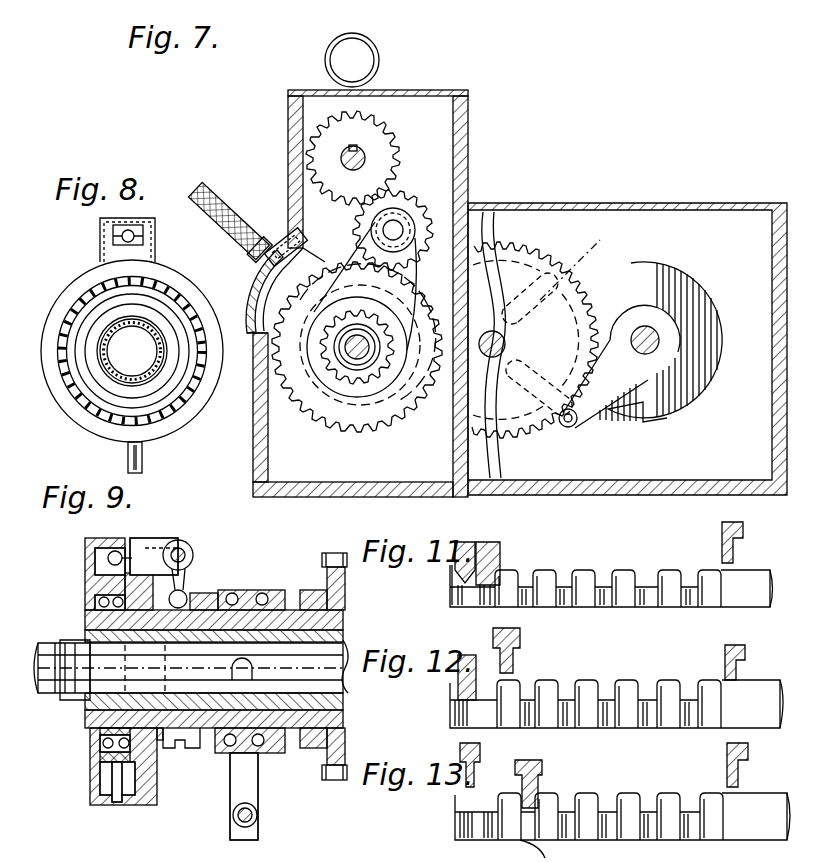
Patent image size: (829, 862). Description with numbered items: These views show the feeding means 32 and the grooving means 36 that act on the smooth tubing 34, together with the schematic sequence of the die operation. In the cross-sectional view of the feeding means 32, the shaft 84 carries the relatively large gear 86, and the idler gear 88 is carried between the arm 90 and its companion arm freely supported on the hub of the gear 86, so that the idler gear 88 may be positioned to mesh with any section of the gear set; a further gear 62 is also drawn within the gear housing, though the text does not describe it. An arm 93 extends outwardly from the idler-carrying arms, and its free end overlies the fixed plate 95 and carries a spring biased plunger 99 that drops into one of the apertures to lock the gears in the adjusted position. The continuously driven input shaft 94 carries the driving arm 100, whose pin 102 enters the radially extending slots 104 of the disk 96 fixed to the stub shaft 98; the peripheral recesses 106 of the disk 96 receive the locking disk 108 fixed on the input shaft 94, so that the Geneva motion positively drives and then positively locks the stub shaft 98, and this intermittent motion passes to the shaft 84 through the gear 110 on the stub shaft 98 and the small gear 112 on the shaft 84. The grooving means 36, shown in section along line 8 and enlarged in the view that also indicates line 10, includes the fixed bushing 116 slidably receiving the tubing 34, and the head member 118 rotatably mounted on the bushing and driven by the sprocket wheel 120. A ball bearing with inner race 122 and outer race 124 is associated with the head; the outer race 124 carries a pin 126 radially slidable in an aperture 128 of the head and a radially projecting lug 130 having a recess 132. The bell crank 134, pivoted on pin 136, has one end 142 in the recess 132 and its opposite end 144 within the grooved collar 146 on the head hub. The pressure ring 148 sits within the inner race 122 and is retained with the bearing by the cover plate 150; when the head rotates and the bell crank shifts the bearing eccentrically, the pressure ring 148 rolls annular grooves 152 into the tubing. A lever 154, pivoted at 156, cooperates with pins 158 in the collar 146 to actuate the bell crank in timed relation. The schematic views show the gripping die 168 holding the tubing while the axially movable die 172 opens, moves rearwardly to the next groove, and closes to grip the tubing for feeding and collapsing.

In FIG. 9, the section line 8— 8 is at (75, 545).
In FIG. 9, the section line 10— 10 is at (228, 550).
In FIG. 7, the feeding means 32 is at (500, 200).
In FIG. 7, the tubing 34 is at (380, 54).
In FIG. 8, the tubing 34 is at (102, 335).
In FIG. 9, the tubing 34 is at (191, 666).
In FIG. 11, the tubing 34 is at (760, 568).
In FIG. 12, the tubing 34 is at (770, 690).
In FIG. 13, the tubing 34 is at (638, 798).
In FIG. 9, the grooving means 36 is at (82, 782).
In FIG. 7, the drive gear 62 is at (405, 133).
In FIG. 7, the shaft 84 is at (346, 366).
In FIG. 7, the gear 86 is at (388, 414).
In FIG. 7, the idler gear 88 is at (400, 206).
In FIG. 7, the arm 90 is at (357, 264).
In FIG. 7, the arm 93 is at (279, 238).
In FIG. 7, the input shaft 94 is at (648, 328).
In FIG. 7, the fixed plate 95 is at (249, 302).
In FIG. 7, the disk 96 is at (583, 234).
In FIG. 7, the stub shaft 98 is at (506, 343).
In FIG. 7, the spring biased plunger 99 is at (212, 186).
In FIG. 7, the driving arm 100 is at (600, 406).
In FIG. 7, the pin 102 is at (569, 428).
In FIG. 7, the slots 104 is at (634, 236).
In FIG. 7, the peripheral recesses 106 is at (528, 240).
In FIG. 7, the locking disk 108 is at (700, 404).
In FIG. 7, the gear 110 is at (557, 230).
In FIG. 7, the small gear 112 is at (326, 376).
In FIG. 9, the fixed bushing 116 is at (330, 628).
In FIG. 9, the head member 118 is at (150, 806).
In FIG. 9, the sprocket wheel 120 is at (345, 595).
In FIG. 8, the inner race 122 is at (178, 375).
In FIG. 9, the inner race 122 is at (96, 608).
In FIG. 8, the outer race 124 is at (100, 258).
In FIG. 9, the outer race 124 is at (96, 580).
In FIG. 8, the pin 126 is at (142, 452).
In FIG. 9, the pin 126 is at (100, 776).
In FIG. 9, the aperture 128 is at (118, 806).
In FIG. 9, the lug 130 is at (118, 552).
In FIG. 8, the recess 132 is at (150, 235).
In FIG. 9, the recess 132 is at (108, 558).
In FIG. 9, the bell crank 134 is at (182, 540).
In FIG. 9, the pin 136 is at (192, 556).
In FIG. 8, the end of bell crank 142 is at (122, 237).
In FIG. 9, the end of bell crank 142 is at (152, 545).
In FIG. 9, the end of bell crank 144 is at (190, 592).
In FIG. 9, the grooved collar 146 is at (190, 748).
In FIG. 8, the pressure ring 148 is at (88, 378).
In FIG. 9, the pressure ring 148 is at (96, 729).
In FIG. 11, the pressure ring 148 is at (743, 526).
In FIG. 12, the pressure ring 148 is at (745, 649).
In FIG. 13, the pressure ring 148 is at (748, 750).
In FIG. 9, the cover plate 150 is at (100, 753).
In FIG. 12, the cover plate 150 is at (732, 726).
In FIG. 9, the annular grooves 152 is at (72, 700).
In FIG. 9, the lever 154 is at (230, 784).
In FIG. 11, the lever 154 is at (645, 575).
In FIG. 12, the lever 154 is at (535, 685).
In FIG. 13, the lever 154 is at (612, 798).
In FIG. 9, the pivot 156 is at (258, 816).
In FIG. 9, the pins 158 is at (252, 672).
In FIG. 11, the gripping die 168 is at (465, 542).
In FIG. 12, the gripping die 168 is at (468, 656).
In FIG. 13, the gripping die 168 is at (480, 751).
In FIG. 11, the die 172 is at (495, 542).
In FIG. 12, the die 172 is at (520, 634).
In FIG. 13, the die 172 is at (542, 764).